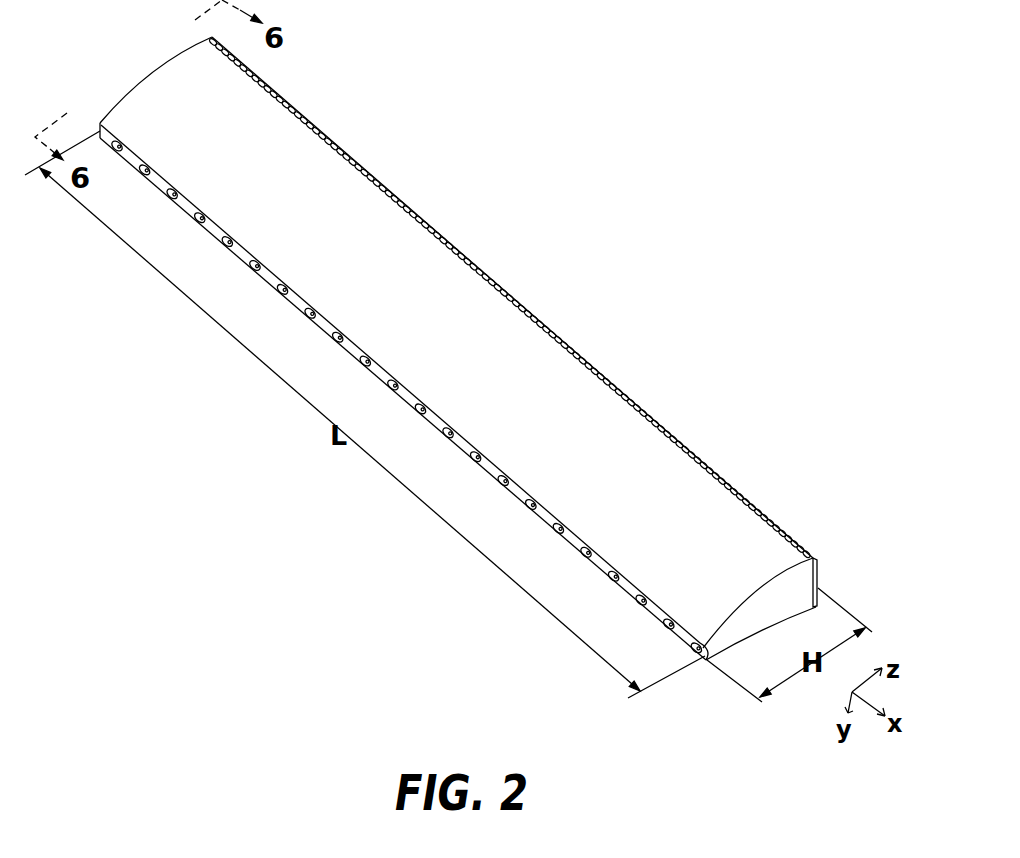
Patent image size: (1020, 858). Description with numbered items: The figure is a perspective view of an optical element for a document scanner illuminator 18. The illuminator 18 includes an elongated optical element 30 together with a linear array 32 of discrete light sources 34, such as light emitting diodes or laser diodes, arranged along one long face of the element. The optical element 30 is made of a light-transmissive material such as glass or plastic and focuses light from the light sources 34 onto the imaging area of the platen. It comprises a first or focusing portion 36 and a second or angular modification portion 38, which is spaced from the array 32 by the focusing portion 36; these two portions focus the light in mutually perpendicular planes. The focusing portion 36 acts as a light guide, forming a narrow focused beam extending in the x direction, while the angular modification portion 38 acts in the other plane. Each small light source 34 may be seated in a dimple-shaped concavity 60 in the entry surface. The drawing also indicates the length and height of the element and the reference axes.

The illuminator 18 is at (147, 38).
The optical element 30 is at (572, 390).
The linear array 32 is at (614, 605).
The light sources 34 is at (527, 502).
The focusing portion 36 is at (743, 634).
The angular modification portion 38 is at (817, 576).
The dimple-shaped concavity 60 is at (610, 578).